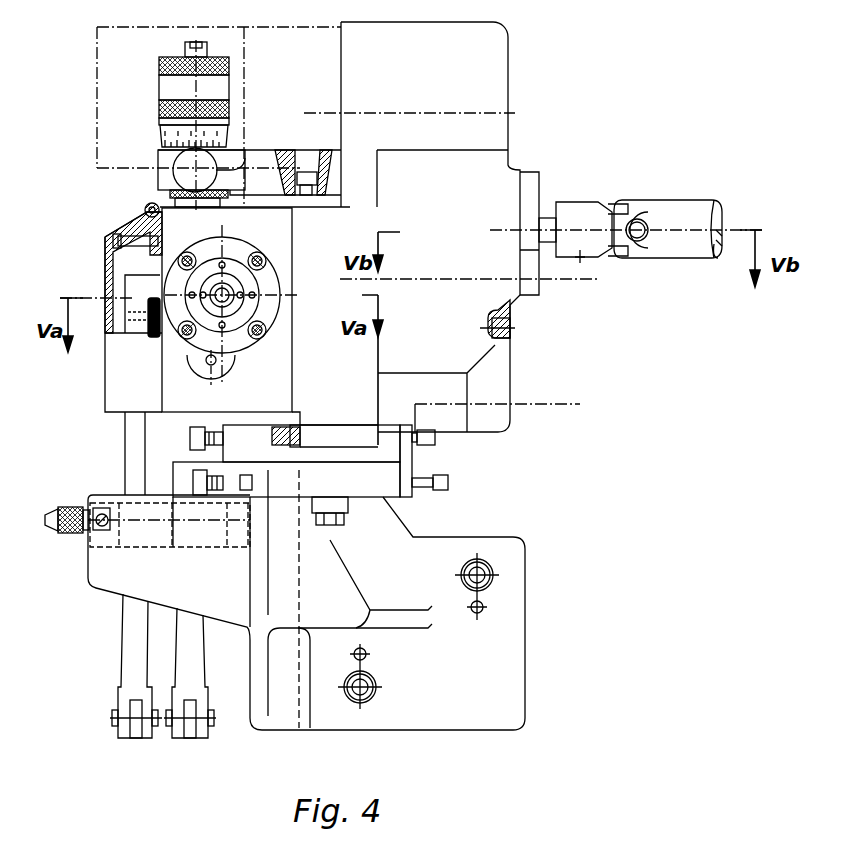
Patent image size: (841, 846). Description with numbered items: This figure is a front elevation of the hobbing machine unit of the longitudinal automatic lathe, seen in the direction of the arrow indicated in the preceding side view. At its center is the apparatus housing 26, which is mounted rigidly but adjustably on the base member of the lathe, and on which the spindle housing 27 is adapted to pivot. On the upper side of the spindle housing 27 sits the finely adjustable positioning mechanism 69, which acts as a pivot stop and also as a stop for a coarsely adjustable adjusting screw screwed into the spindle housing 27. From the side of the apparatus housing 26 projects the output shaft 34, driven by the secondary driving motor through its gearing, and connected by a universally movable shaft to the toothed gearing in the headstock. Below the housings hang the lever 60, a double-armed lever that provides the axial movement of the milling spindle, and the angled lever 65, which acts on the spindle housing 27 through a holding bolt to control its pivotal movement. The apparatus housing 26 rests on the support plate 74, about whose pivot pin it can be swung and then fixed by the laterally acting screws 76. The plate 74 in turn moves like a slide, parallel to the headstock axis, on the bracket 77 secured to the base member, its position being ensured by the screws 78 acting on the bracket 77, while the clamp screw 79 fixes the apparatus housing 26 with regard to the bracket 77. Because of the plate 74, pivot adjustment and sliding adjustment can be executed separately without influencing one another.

The apparatus housing 26 is at (497, 383).
The spindle housing 27 is at (175, 388).
The output shaft 34 is at (688, 246).
The lever 60 is at (133, 646).
The angled lever 65 is at (193, 653).
The finely adjustable positioning mechanism 69 is at (221, 82).
The support plate 74 is at (342, 456).
The laterally acting screws 76 is at (193, 438).
The bracket 77 is at (508, 656).
The screws 78 is at (193, 480).
The clamp screw 79 is at (330, 527).